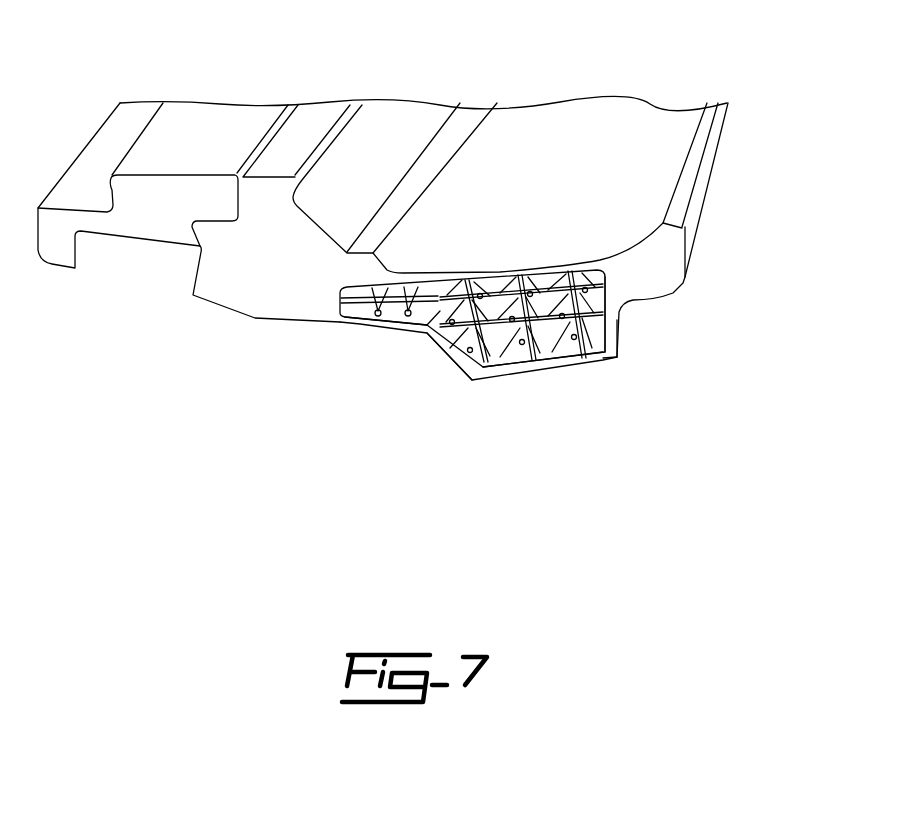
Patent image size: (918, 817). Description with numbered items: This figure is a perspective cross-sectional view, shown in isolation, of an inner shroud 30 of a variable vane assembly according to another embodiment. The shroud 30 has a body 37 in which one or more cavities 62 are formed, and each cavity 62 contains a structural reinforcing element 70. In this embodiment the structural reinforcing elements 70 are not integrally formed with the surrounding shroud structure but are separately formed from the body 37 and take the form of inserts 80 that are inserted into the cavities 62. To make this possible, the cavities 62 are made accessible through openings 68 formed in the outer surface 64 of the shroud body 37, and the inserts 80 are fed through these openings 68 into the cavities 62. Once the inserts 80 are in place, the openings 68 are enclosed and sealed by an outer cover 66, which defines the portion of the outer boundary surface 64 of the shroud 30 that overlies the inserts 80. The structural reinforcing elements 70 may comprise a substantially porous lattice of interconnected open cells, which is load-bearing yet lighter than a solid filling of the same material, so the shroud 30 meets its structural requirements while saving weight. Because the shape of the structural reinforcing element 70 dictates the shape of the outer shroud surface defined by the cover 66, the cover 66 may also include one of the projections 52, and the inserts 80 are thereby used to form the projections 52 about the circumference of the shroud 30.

The shroud 30 is at (628, 193).
The body 37 is at (657, 272).
The projections 52 is at (495, 385).
The cavities 62 is at (479, 370).
The outer surface 64 is at (517, 378).
The outer cover 66 is at (405, 327).
The openings 68 is at (597, 360).
The structural reinforcing elements 70 is at (566, 380).
The inserts 80 is at (538, 341).